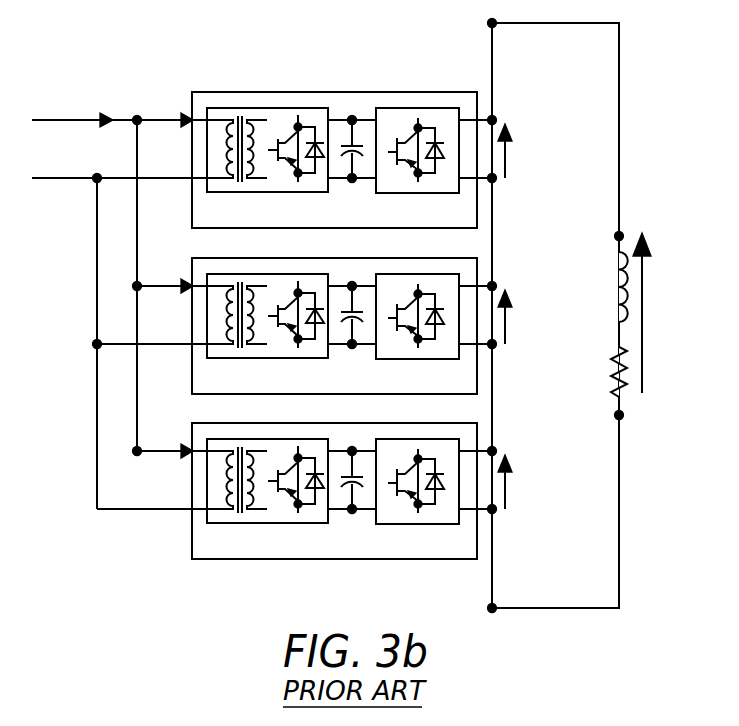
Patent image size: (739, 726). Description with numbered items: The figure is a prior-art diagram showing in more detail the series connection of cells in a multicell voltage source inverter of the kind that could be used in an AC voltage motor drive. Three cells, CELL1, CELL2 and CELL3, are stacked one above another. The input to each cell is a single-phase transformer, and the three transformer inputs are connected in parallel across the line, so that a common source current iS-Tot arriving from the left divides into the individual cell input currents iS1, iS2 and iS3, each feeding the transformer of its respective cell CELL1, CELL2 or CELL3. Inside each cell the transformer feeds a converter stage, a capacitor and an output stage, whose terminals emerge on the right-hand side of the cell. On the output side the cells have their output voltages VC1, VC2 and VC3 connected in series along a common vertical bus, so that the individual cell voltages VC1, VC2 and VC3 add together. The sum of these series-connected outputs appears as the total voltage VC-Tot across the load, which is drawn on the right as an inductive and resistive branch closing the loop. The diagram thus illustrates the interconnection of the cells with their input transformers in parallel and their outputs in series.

The total source current iS-Tot is at (84, 128).
The cell 1 source current iS1 is at (162, 98).
The cell 2 source current iS2 is at (162, 264).
The cell 3 source current iS3 is at (162, 429).
The cell 1 CELL1 is at (317, 160).
The cell 2 CELL2 is at (317, 326).
The cell 3 CELL3 is at (317, 491).
The output voltage VC1 is at (523, 151).
The output voltage VC2 is at (523, 317).
The output voltage VC3 is at (523, 482).
The total compensator voltage VC-Tot is at (674, 313).